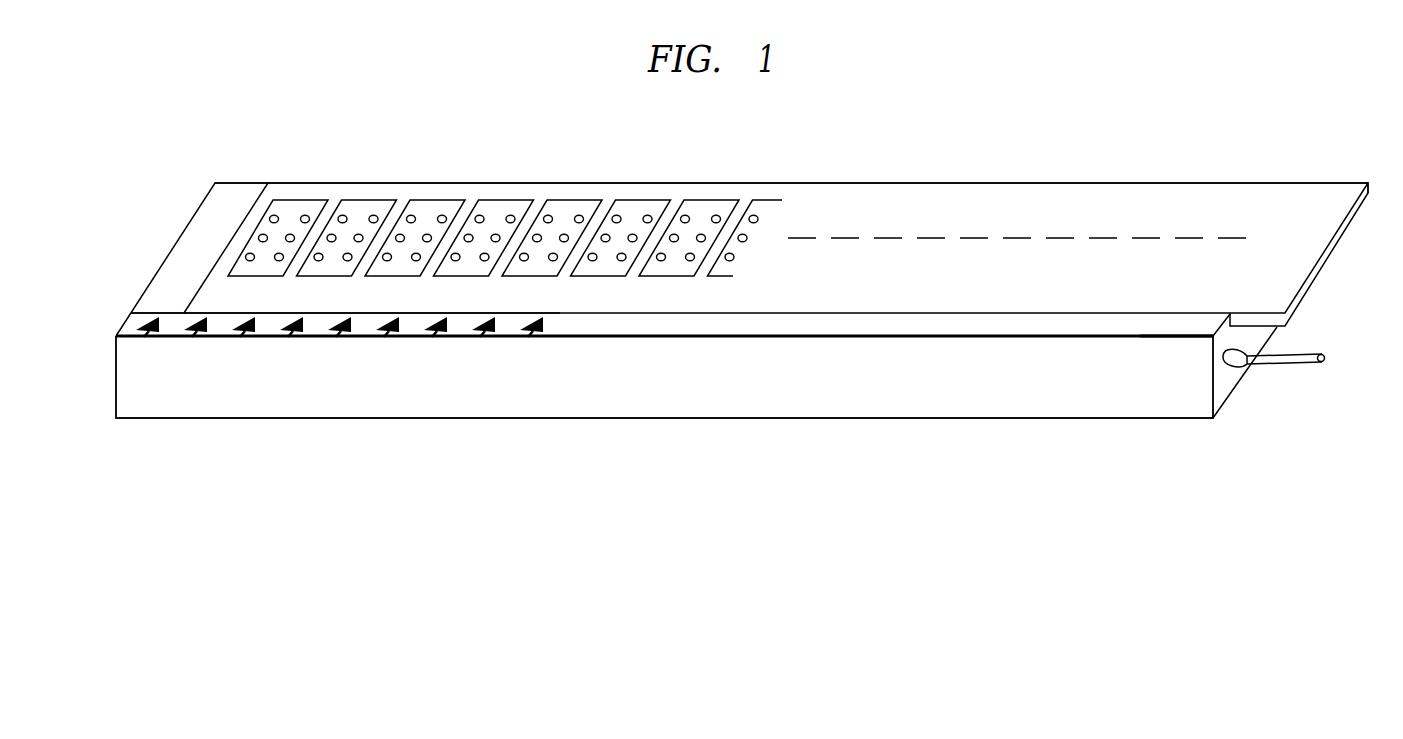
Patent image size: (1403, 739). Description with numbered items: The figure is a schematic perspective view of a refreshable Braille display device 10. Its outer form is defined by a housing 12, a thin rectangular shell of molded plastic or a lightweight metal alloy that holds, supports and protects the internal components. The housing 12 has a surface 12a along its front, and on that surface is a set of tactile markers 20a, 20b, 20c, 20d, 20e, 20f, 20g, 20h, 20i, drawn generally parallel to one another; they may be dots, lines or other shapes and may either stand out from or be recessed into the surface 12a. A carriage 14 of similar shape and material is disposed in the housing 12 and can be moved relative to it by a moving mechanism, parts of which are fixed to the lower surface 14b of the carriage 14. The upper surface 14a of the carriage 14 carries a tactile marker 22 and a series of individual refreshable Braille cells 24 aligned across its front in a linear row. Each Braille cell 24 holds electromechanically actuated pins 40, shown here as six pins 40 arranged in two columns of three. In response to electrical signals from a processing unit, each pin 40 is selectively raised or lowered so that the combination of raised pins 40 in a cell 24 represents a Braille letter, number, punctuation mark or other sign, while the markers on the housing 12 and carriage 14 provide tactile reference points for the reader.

The refreshable Braille display device 10 is at (101, 320).
The housing 12 is at (1072, 403).
The surface of housing 12a is at (1158, 327).
The carriage 14 is at (1033, 177).
The surface of carriage 14a is at (1110, 208).
The lower surface of carriage 14b is at (1277, 328).
The tactile marker 20a is at (150, 340).
The tactile marker 20b is at (198, 340).
The tactile marker 20c is at (246, 340).
The tactile marker 20d is at (294, 340).
The tactile marker 20e is at (342, 340).
The tactile marker 20f is at (390, 340).
The tactile marker 20g is at (438, 340).
The tactile marker 20h is at (486, 340).
The tactile marker 20i is at (534, 340).
The tactile marker 22 is at (203, 300).
The refreshable Braille cell 24 is at (583, 193).
The pin 40 is at (543, 215).